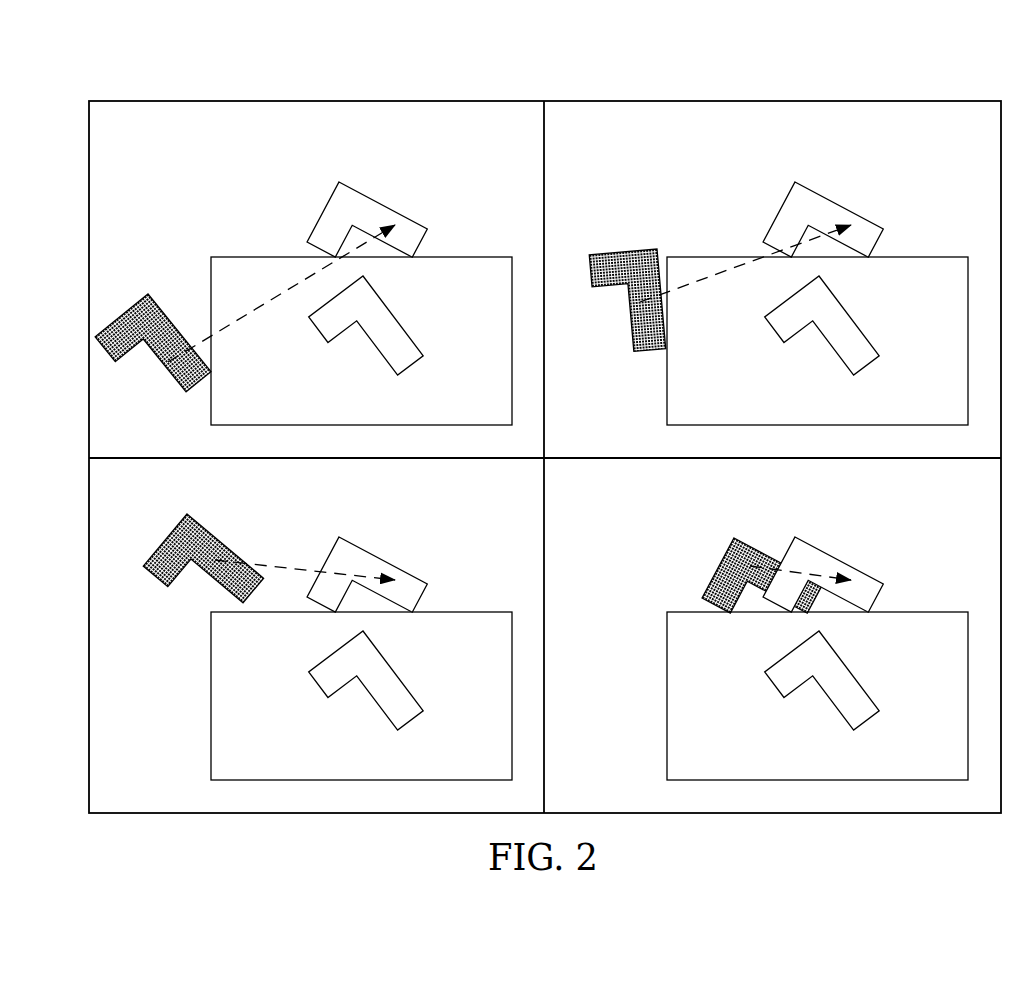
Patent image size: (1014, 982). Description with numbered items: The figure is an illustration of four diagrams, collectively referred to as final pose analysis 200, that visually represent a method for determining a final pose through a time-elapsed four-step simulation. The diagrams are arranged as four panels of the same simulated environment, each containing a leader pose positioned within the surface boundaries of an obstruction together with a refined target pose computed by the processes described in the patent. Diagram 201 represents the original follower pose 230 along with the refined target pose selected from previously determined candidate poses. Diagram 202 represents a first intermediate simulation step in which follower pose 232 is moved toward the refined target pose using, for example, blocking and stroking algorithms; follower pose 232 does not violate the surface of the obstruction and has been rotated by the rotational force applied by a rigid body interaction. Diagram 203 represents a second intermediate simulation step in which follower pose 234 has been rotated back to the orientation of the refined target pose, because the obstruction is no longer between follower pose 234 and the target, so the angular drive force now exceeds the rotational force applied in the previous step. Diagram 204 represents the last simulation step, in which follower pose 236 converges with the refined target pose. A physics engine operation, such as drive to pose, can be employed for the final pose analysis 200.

The final pose analysis 200 is at (327, 68).
The diagram 201 is at (230, 170).
The diagram 202 is at (687, 170).
The diagram 203 is at (145, 518).
The diagram 204 is at (649, 518).
The original follower pose 230 is at (167, 381).
The follower pose 232 is at (621, 250).
The follower pose 234 is at (225, 546).
The follower pose 236 is at (757, 546).